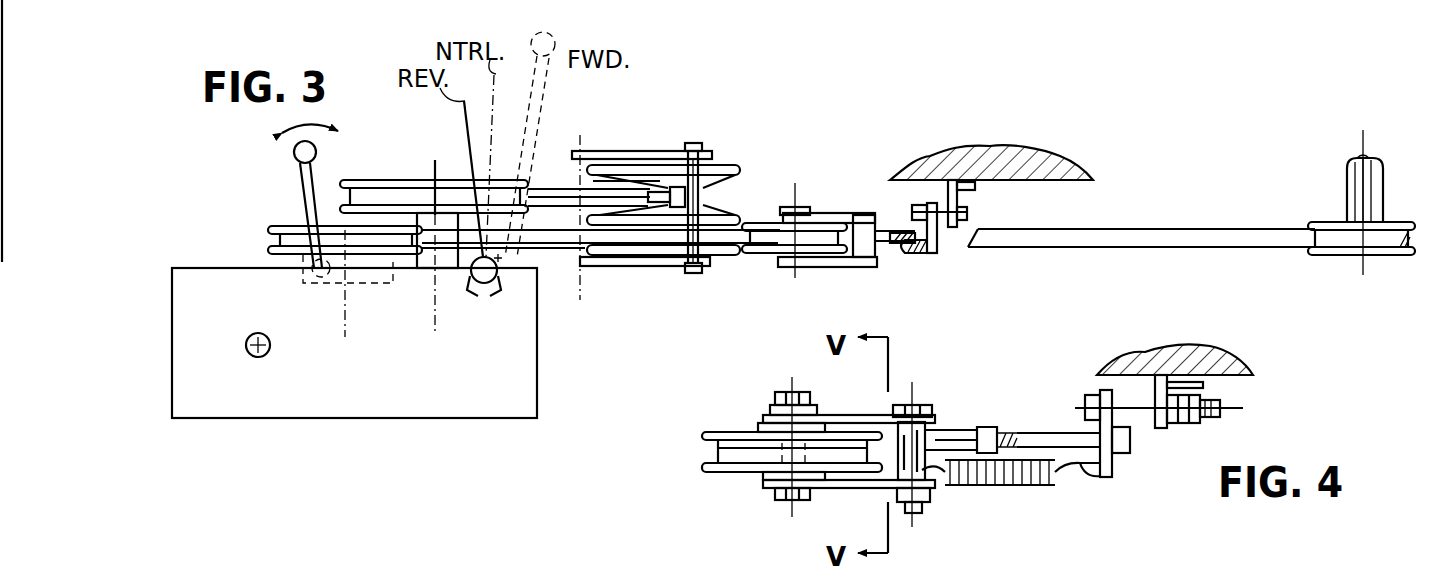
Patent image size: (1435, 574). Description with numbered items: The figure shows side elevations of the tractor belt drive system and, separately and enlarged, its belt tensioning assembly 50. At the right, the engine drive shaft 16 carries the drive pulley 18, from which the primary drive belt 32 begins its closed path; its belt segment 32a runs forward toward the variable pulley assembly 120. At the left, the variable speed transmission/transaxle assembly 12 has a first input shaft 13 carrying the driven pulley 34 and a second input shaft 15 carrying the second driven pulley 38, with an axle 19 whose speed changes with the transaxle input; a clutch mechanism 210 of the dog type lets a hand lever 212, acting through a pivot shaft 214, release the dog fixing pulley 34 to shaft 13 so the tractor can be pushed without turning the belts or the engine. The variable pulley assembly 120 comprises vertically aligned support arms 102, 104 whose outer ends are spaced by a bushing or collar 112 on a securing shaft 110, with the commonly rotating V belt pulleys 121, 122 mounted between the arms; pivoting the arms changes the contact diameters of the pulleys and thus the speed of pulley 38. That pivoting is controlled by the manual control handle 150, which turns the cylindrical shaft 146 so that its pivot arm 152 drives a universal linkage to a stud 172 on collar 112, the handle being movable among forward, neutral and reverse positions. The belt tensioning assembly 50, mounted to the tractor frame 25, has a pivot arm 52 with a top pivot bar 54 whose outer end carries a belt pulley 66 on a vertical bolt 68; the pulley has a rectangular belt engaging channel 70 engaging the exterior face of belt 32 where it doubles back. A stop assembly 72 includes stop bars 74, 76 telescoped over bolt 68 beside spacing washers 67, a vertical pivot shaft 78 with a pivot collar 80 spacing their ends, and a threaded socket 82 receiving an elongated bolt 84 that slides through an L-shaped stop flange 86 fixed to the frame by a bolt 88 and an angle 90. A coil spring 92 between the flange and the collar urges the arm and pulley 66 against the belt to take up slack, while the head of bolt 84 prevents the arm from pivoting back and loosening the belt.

In FIG. 3, the variable speed transmission/transaxle assembly 12 is at (428, 390).
In FIG. 3, the input shaft 13 is at (340, 283).
In FIG. 3, the second input shaft 15 is at (433, 268).
In FIG. 3, the engine drive shaft 16 is at (1347, 188).
In FIG. 3, the drive pulley 18 is at (1315, 224).
In FIG. 3, the axle 19 is at (248, 352).
In FIG. 3, the tractor frame 25 is at (1055, 152).
In FIG. 4, the tractor frame 25 is at (1215, 348).
In FIG. 3, the primary drive belt 32 is at (1141, 235).
In FIG. 3, the belt segment 32a is at (1095, 249).
In FIG. 3, the driven pulley 34 is at (270, 228).
In FIG. 3, the second driven pulley 38 is at (348, 180).
In FIG. 3, the belt tensioning assembly 50 is at (850, 265).
In FIG. 4, the belt tensioning assembly 50 is at (982, 376).
In FIG. 3, the pivot arm 52 is at (802, 208).
In FIG. 4, the pivot arm 52 is at (822, 410).
In FIG. 4, the top pivot bar 54 is at (770, 406).
In FIG. 3, the belt pulley 66 is at (762, 255).
In FIG. 4, the belt pulley 66 is at (708, 472).
In FIG. 4, the spacing washers 67 is at (758, 427).
In FIG. 4, the vertical bolt 68 is at (790, 392).
In FIG. 4, the belt engaging channel 70 is at (708, 456).
In FIG. 4, the stop assembly 72 is at (925, 422).
In FIG. 4, the stop bar 74 is at (866, 415).
In FIG. 4, the stop bar 76 is at (836, 490).
In FIG. 4, the vertical pivot shaft 78 is at (912, 395).
In FIG. 4, the pivot collar 80 is at (905, 462).
In FIG. 4, the threaded socket 82 is at (938, 434).
In FIG. 3, the elongated bolt 84 is at (905, 247).
In FIG. 4, the elongated bolt 84 is at (1035, 431).
In FIG. 3, the L-shaped stop flange 86 is at (924, 210).
In FIG. 4, the L-shaped stop flange 86 is at (1112, 476).
In FIG. 3, the bolt 88 is at (940, 205).
In FIG. 4, the bolt 88 is at (1140, 414).
In FIG. 3, the angle 90 is at (975, 190).
In FIG. 4, the angle 90 is at (1215, 378).
In FIG. 4, the coil spring 92 is at (1000, 488).
In FIG. 3, the support arm 102 is at (612, 150).
In FIG. 3, the support arm 104 is at (610, 265).
In FIG. 3, the securing shaft 110 is at (698, 143).
In FIG. 3, the bushing or collar 112 is at (700, 190).
In FIG. 3, the variable pulley assembly 120 is at (740, 168).
In FIG. 3, the V belt pulley 121 is at (742, 183).
In FIG. 3, the V belt pulley 122 is at (708, 258).
In FIG. 3, the cylindrical shaft 146 is at (492, 280).
In FIG. 3, the manual control handle 150 is at (526, 100).
In FIG. 3, the pivot arm 152 is at (500, 262).
In FIG. 3, the stud 172 is at (666, 204).
In FIG. 3, the clutch mechanism 210 is at (368, 283).
In FIG. 3, the hand lever 212 is at (300, 197).
In FIG. 3, the pivot shaft 214 is at (318, 276).